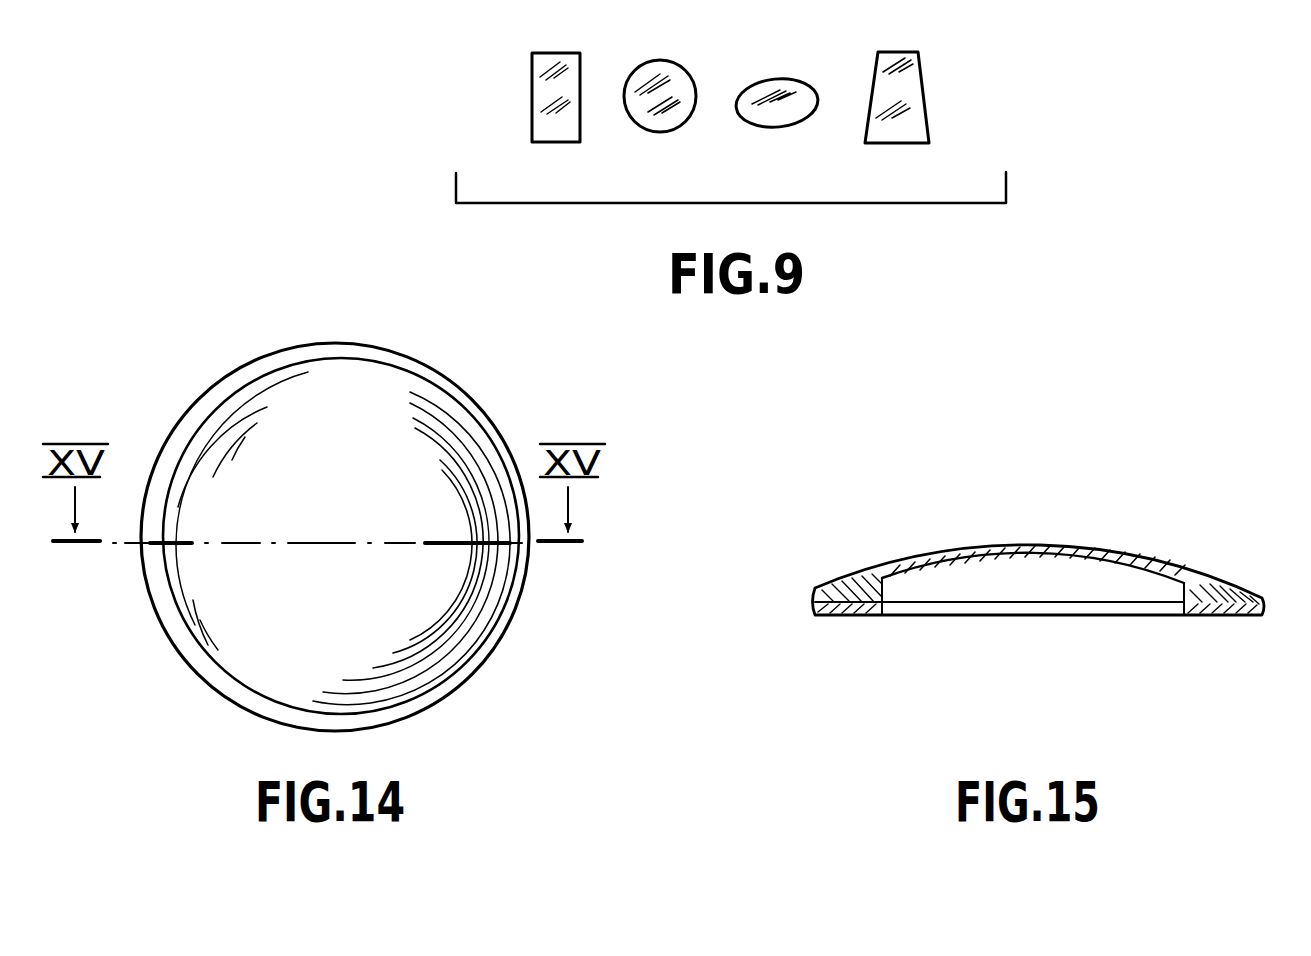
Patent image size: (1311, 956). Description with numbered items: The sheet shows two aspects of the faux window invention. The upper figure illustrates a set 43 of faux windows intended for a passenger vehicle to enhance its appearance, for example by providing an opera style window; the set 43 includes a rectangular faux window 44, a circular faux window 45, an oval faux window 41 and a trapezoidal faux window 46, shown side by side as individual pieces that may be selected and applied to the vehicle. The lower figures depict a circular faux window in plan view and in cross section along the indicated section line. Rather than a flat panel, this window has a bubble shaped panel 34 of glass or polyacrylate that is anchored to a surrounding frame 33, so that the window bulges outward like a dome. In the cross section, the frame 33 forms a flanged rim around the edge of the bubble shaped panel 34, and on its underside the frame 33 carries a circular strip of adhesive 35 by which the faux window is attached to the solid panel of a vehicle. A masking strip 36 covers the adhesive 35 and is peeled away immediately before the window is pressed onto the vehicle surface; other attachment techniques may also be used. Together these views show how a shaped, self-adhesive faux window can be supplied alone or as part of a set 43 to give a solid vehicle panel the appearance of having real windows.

In FIG. 9, the set of faux windows 43 is at (517, 73).
In FIG. 9, the rectangular faux window 44 is at (534, 118).
In FIG. 9, the circular faux window 45 is at (638, 118).
In FIG. 9, the oval faux window 41 is at (757, 115).
In FIG. 9, the trapezoidal faux window 46 is at (920, 127).
In FIG. 14, the frame 33 is at (188, 432).
In FIG. 15, the frame 33 is at (1228, 588).
In FIG. 14, the bubble shaped panel 34 is at (205, 613).
In FIG. 15, the bubble shaped panel 34 is at (1042, 543).
In FIG. 15, the circular strip of adhesive 35 is at (826, 590).
In FIG. 15, the masking strip 36 is at (845, 618).